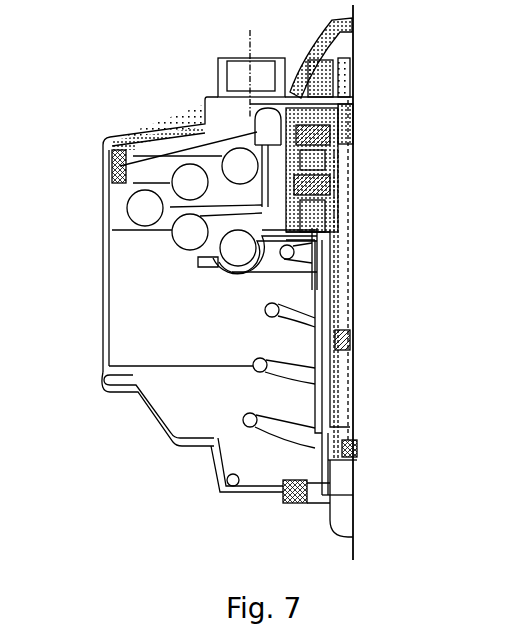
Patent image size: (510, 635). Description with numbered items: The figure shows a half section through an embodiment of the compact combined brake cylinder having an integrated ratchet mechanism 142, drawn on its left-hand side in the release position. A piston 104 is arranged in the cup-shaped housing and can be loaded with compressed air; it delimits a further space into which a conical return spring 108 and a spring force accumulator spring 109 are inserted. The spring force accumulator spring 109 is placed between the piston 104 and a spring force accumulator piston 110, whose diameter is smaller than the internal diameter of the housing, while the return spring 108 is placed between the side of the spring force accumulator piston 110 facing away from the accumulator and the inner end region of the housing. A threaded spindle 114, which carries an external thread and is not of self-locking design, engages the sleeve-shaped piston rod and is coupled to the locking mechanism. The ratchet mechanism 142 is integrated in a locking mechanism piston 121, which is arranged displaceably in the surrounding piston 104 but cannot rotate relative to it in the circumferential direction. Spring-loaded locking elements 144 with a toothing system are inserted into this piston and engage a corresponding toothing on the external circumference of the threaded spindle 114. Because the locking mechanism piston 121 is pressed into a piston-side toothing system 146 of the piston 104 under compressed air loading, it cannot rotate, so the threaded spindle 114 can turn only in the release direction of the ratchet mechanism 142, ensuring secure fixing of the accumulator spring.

The piston 104 is at (167, 148).
The locking mechanism piston 121 is at (300, 167).
The spring force accumulator spring 109 is at (187, 233).
The spring force accumulator piston 110 is at (236, 267).
The return spring 108 is at (244, 425).
The piston-side toothing system 146 is at (353, 138).
The ratchet mechanism 142 is at (320, 172).
The locking elements 144 is at (507, 187).
The threaded spindle 114 is at (327, 210).